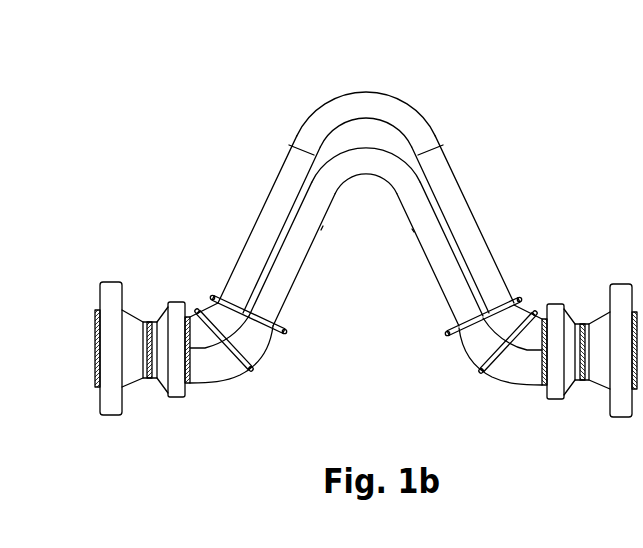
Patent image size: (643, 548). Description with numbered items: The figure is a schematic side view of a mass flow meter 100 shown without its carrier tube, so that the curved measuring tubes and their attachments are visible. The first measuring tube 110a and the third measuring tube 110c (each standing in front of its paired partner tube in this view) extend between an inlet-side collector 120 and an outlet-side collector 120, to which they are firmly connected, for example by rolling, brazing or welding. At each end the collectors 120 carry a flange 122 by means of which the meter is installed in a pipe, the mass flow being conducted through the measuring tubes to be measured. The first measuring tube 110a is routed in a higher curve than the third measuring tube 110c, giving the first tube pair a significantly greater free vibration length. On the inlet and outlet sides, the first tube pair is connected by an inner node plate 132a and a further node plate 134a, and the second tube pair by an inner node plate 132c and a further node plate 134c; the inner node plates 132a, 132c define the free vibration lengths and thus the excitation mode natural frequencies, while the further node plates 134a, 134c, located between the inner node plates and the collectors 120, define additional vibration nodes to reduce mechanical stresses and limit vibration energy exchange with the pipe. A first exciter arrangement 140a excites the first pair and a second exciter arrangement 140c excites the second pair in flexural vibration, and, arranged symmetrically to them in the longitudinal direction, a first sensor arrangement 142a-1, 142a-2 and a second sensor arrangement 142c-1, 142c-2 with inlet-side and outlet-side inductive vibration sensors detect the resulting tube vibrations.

The mass flow meter 100 is at (455, 110).
The first measuring tube 110a is at (340, 105).
The third measuring tube 110c is at (327, 175).
The first exciter arrangement 140a is at (367, 118).
The second exciter arrangement 140c is at (367, 177).
The inlet-side vibration sensor of first sensor arrangement 142a-1 is at (329, 200).
The outlet-side vibration sensor of first sensor arrangement 142a-2 is at (403, 200).
The inlet-side vibration sensor of second sensor arrangement 142c-1 is at (323, 226).
The outlet-side vibration sensor of second sensor arrangement 142c-2 is at (412, 229).
The inner node plate of first measuring tube pair 132a is at (214, 298).
The inner node plate of second measuring tube pair 132c is at (287, 330).
The further node plate of first measuring tube pair 134a is at (214, 356).
The further node plate of second measuring tube pair 134c is at (254, 369).
The collector 120 is at (178, 372).
The flange 122 is at (117, 400).